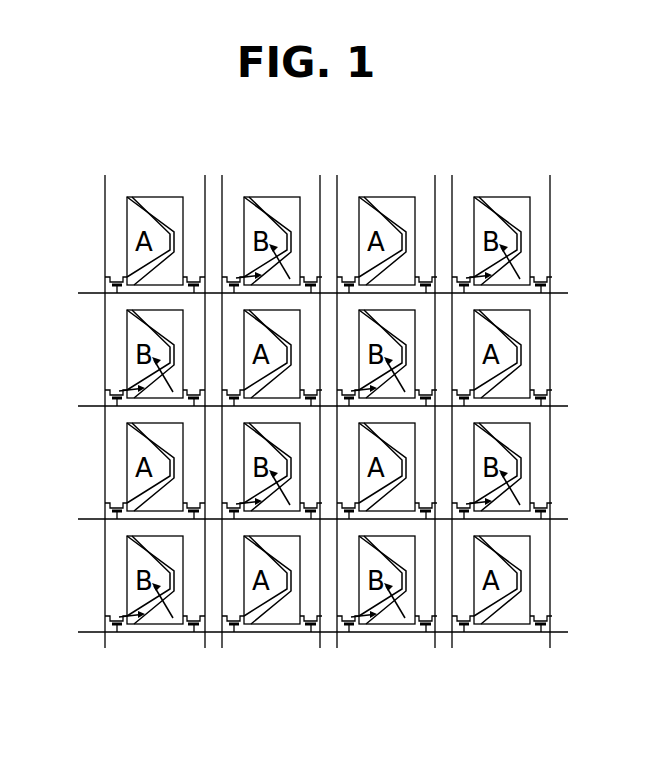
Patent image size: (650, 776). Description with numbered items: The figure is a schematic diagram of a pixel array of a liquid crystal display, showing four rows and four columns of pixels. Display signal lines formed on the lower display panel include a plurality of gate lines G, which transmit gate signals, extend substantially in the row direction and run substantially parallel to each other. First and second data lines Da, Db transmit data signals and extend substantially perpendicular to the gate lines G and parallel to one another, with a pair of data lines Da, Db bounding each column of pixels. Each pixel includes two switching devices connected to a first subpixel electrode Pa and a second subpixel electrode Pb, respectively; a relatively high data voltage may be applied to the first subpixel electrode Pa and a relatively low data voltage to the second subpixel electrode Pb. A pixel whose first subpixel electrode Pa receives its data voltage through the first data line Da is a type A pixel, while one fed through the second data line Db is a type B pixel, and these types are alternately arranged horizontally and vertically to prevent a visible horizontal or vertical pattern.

The first subpixel electrode Pa is at (128, 236).
The second subpixel electrode Pb is at (155, 197).
The first data line Da is at (283, 398).
The second data line Db is at (373, 398).
The gate line G is at (313, 462).